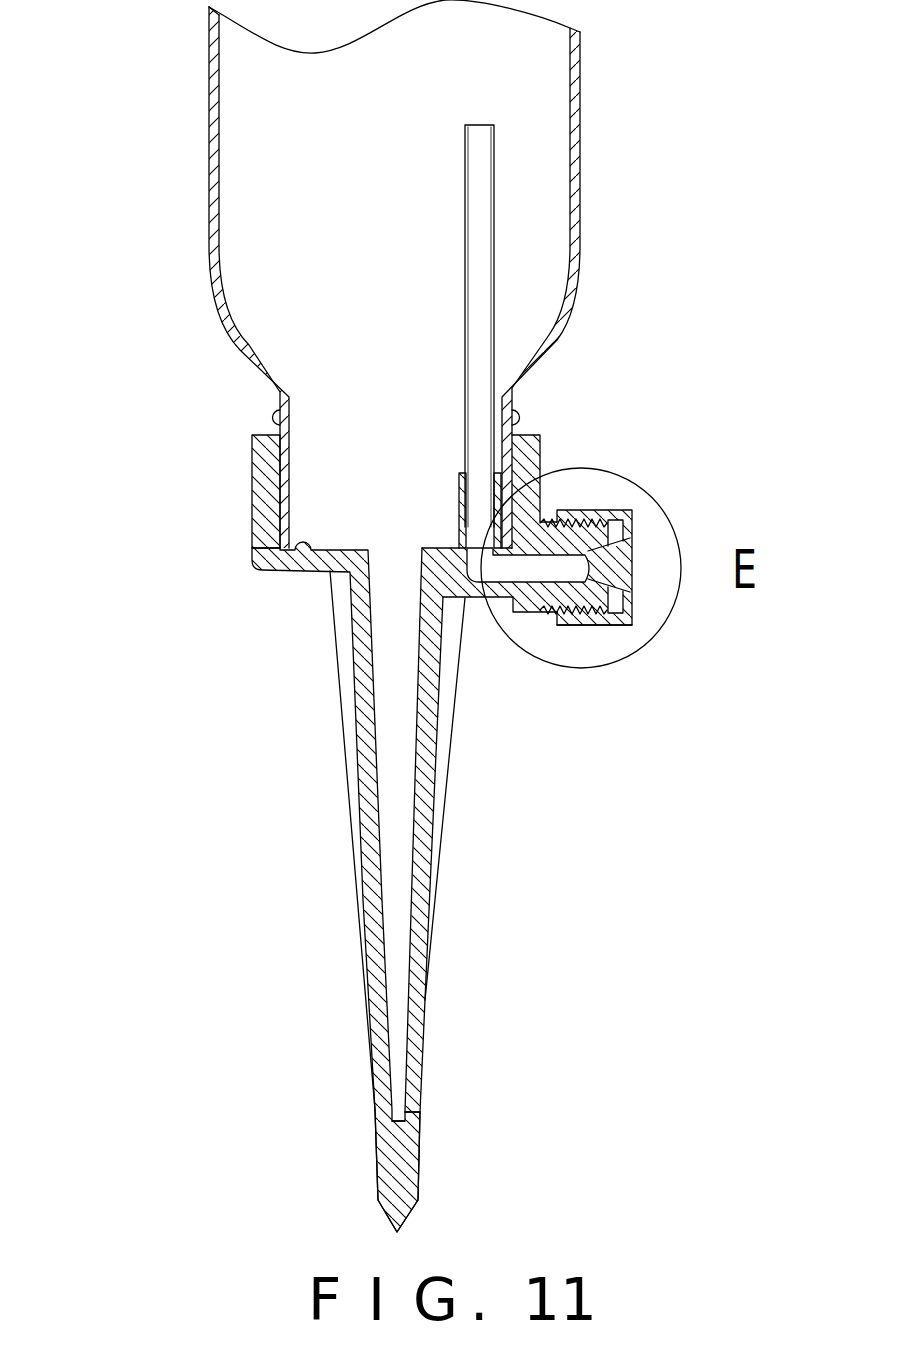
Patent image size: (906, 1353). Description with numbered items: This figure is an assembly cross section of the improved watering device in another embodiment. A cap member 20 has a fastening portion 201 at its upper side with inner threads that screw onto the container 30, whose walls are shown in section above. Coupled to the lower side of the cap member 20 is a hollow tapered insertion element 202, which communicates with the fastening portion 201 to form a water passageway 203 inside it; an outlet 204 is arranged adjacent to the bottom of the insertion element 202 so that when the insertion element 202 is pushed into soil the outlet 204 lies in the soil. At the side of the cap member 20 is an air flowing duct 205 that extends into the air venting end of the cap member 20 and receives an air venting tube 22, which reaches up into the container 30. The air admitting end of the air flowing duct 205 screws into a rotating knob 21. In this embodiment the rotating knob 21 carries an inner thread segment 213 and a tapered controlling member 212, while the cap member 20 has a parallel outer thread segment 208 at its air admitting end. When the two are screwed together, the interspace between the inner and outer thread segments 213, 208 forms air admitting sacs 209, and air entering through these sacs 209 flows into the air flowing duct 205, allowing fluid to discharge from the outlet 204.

The cap member 20 is at (230, 535).
The fastening portion 201 is at (273, 482).
The insertion element 202 is at (337, 663).
The water passageway 203 is at (395, 740).
The outlet 204 is at (410, 1123).
The air flowing duct 205 is at (498, 565).
The rotating knob 21 is at (615, 507).
The air admitting sacs 209 is at (567, 523).
The outer thread segment 208 is at (557, 617).
The tapered controlling member 212 is at (600, 570).
The inner thread segment 213 is at (603, 627).
The air venting tube 22 is at (493, 165).
The container 30 is at (580, 213).